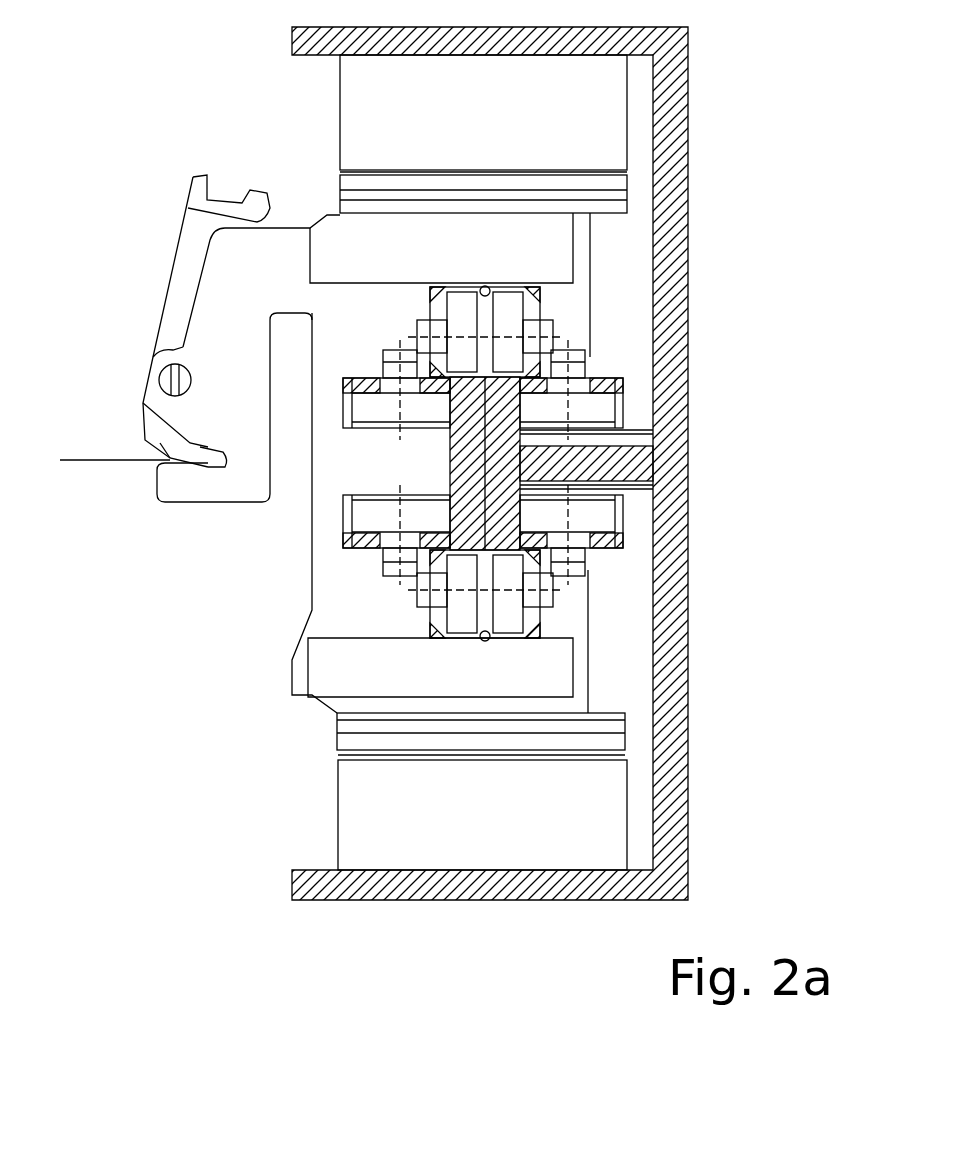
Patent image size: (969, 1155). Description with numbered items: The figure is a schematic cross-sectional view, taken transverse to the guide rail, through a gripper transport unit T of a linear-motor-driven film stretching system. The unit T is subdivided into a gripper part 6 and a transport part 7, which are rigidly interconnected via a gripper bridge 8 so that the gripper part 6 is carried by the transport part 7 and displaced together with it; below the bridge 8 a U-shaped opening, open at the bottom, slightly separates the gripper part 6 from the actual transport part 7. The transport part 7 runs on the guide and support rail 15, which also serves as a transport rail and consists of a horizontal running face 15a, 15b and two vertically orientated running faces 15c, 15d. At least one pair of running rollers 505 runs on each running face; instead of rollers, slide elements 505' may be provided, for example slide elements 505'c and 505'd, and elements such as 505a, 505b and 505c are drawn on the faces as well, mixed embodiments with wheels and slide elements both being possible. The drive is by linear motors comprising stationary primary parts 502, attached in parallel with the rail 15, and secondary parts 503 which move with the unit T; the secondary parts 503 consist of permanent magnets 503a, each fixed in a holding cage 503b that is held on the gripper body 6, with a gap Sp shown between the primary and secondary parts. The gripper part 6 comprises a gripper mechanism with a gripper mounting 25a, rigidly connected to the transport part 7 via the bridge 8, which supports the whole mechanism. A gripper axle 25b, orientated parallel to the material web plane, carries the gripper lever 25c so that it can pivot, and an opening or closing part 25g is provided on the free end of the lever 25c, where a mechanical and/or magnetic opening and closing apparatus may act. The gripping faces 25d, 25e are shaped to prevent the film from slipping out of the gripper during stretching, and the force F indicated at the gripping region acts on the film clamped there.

The gripper transport unit T is at (722, 64).
The primary parts 502 is at (605, 108).
The secondary parts 503 is at (318, 738).
The permanent magnets 503a is at (615, 183).
The holding cage 503b is at (612, 200).
The gap Sp is at (623, 172).
The gripper bridge 8 is at (292, 263).
The gripper part 6 is at (204, 118).
The gripper lever 25c is at (170, 285).
The opening or closing part 25g is at (233, 184).
The gripper axle 25b is at (160, 378).
The gripper mounting 25a is at (200, 423).
The gripping face 25e is at (207, 463).
The gripping face 25d is at (160, 443).
The force F is at (115, 439).
The transport part 7 is at (620, 311).
The guide and support rail 15 is at (620, 464).
The horizontal running face 15a is at (588, 358).
The horizontal running face 15b is at (540, 580).
The vertically orientated running face 15c is at (450, 460).
The vertically orientated running face 15d is at (565, 432).
The running rollers 505 is at (651, 521).
The upper sleeve 505a is at (467, 315).
The slide elements 505' is at (469, 317).
The lower sleeve 505b is at (508, 622).
The upper left flange 505c is at (377, 402).
The slide element 505'c is at (277, 567).
The slide element 505'd is at (662, 400).